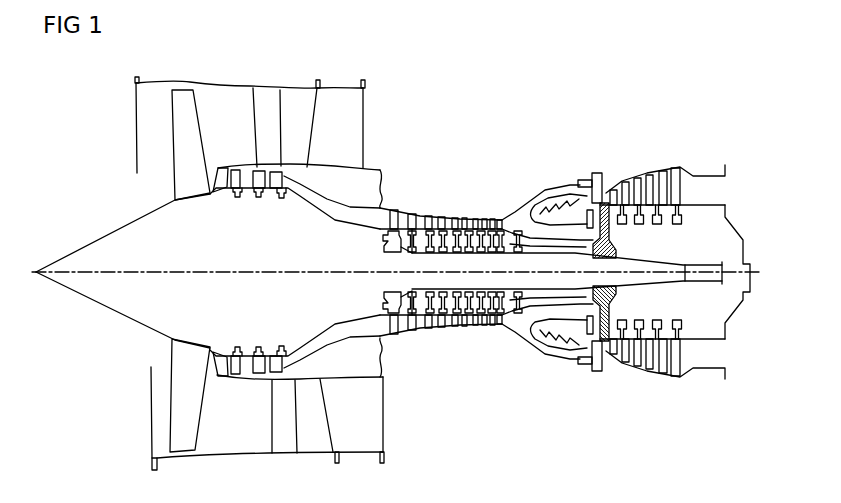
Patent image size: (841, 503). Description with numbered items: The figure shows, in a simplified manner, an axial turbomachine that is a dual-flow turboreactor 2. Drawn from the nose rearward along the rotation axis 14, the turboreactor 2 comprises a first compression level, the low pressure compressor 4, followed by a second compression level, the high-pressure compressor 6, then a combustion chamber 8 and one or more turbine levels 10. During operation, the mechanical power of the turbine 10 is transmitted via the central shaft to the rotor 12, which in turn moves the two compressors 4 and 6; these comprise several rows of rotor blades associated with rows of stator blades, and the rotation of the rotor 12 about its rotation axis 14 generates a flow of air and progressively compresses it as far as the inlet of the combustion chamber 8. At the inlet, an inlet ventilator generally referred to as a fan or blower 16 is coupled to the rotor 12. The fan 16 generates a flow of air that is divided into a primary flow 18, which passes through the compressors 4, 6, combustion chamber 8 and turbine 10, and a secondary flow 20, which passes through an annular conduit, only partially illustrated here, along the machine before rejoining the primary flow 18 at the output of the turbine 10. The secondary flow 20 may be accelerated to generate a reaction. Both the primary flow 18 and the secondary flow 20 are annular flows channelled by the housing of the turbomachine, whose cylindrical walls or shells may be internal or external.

The turboreactor 2 is at (550, 104).
The low pressure compressor 4 is at (232, 194).
The high-pressure compressor 6 is at (422, 208).
The combustion chamber 8 is at (542, 226).
The turbine 10 is at (665, 182).
The rotor 12 is at (108, 294).
The rotation axis 14 is at (262, 276).
The fan 16 is at (188, 139).
The primary flow 18 is at (290, 183).
The secondary flow 20 is at (360, 117).